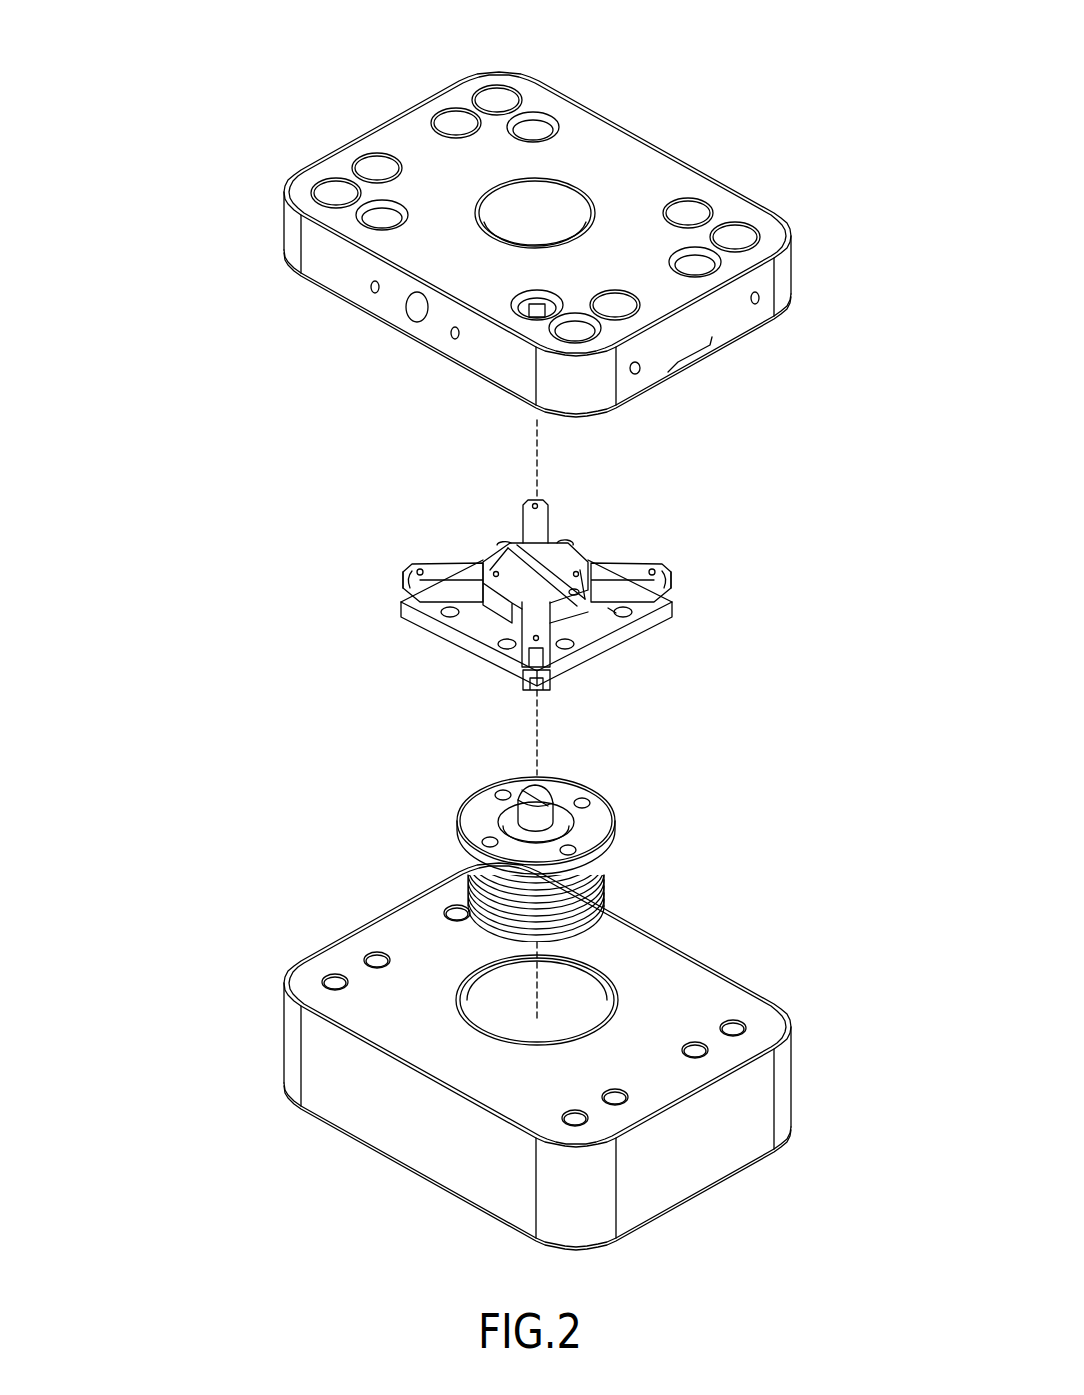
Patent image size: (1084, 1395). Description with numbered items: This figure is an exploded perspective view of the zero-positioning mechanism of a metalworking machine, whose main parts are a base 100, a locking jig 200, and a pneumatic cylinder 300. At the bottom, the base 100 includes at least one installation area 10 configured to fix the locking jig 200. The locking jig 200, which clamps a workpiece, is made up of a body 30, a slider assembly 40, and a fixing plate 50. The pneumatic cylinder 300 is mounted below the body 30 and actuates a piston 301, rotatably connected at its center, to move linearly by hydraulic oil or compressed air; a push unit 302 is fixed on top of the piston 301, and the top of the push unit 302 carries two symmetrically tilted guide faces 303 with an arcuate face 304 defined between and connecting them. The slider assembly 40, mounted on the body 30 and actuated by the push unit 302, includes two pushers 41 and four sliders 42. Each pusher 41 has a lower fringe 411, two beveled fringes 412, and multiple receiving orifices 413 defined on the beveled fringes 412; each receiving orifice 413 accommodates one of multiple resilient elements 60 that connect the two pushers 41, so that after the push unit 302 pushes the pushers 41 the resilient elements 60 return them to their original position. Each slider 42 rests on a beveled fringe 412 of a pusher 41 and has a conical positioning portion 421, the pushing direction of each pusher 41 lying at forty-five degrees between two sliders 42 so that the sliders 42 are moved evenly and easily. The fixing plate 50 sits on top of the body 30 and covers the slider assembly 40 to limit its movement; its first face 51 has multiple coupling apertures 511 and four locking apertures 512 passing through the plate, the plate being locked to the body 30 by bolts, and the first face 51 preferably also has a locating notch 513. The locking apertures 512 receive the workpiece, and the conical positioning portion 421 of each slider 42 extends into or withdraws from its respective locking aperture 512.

The locking jig 200 is at (193, 138).
The fixing plate 50 is at (795, 268).
The first face 51 is at (648, 175).
The coupling apertures 511 is at (377, 172).
The locking apertures 512 is at (537, 130).
The locating notch 513 is at (543, 210).
The slider assembly 40 is at (294, 449).
The pushers 41 is at (503, 565).
The lower fringe 411 is at (575, 555).
The beveled fringes 412 is at (545, 548).
The receiving orifices 413 is at (580, 596).
The sliders 42 is at (438, 571).
The conical positioning portion 421 is at (406, 586).
The body 30 is at (605, 658).
The resilient elements 60 is at (614, 611).
The pneumatic cylinder 300 is at (605, 857).
The piston 301 is at (593, 907).
The push unit 302 is at (567, 813).
The tilted guide faces 303 is at (521, 800).
The arcuate face 304 is at (523, 800).
The base 100 is at (790, 1017).
The installation area 10 is at (580, 1015).